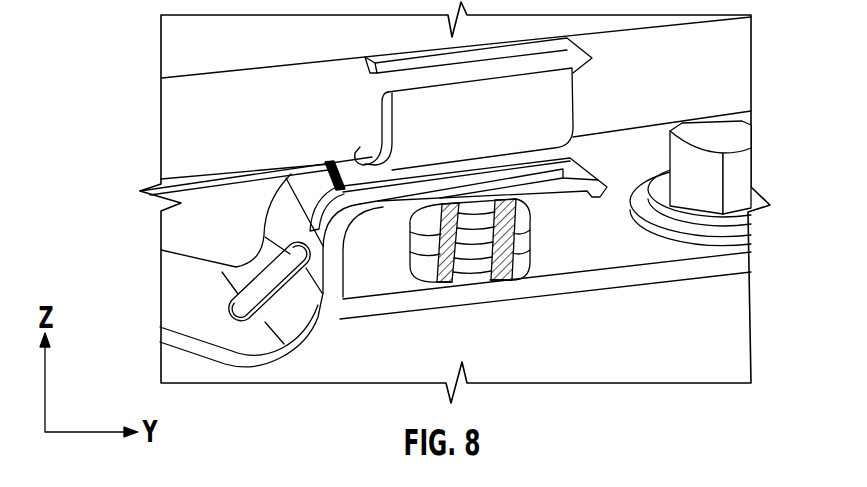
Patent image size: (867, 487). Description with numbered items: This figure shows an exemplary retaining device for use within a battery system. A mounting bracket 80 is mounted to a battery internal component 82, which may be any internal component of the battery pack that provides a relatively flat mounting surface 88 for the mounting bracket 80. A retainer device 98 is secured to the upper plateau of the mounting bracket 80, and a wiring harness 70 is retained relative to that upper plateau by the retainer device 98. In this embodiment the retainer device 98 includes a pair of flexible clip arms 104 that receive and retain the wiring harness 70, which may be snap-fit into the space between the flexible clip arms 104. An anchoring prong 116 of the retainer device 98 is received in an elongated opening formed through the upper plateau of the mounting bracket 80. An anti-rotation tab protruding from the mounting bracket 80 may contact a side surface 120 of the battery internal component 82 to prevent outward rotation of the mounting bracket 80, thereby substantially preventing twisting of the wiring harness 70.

The wiring harness 70 is at (243, 83).
The mounting bracket 80 is at (285, 319).
The battery internal component 82 is at (577, 338).
The mounting surface 88 is at (650, 136).
The retainer device 98 is at (429, 256).
The flexible clip arms 104 is at (593, 58).
The anchoring prong 116 is at (487, 227).
The side surface 120 is at (647, 349).